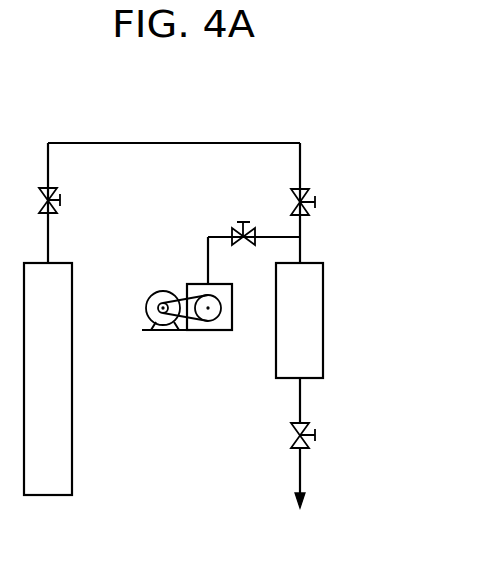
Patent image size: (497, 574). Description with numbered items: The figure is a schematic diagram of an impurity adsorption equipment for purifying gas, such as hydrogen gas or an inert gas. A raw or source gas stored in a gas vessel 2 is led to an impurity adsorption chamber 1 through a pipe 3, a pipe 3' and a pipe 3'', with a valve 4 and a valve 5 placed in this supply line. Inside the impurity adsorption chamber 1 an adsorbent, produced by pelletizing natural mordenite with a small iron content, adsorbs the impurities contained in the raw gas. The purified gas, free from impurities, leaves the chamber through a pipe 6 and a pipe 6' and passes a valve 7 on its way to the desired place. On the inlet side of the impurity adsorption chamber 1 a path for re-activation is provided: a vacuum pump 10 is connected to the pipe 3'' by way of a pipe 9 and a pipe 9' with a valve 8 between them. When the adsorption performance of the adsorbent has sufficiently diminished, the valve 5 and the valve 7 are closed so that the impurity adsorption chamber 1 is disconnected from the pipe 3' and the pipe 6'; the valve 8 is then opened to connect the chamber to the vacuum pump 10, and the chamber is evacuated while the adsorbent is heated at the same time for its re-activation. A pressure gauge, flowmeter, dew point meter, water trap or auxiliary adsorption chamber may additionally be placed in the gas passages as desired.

The impurity adsorption chamber 1 is at (312, 322).
The gas vessel 2 is at (62, 430).
The pipe 3 is at (80, 203).
The pipe 3' is at (174, 171).
The pipe 3'' is at (339, 203).
The valve 4 is at (60, 200).
The valve 5 is at (315, 197).
The pipe 6 is at (335, 399).
The pipe 6' is at (336, 478).
The valve 7 is at (316, 435).
The valve 8 is at (245, 221).
The pipe 9 is at (254, 267).
The pipe 9' is at (186, 255).
The vacuum pump 10 is at (200, 330).